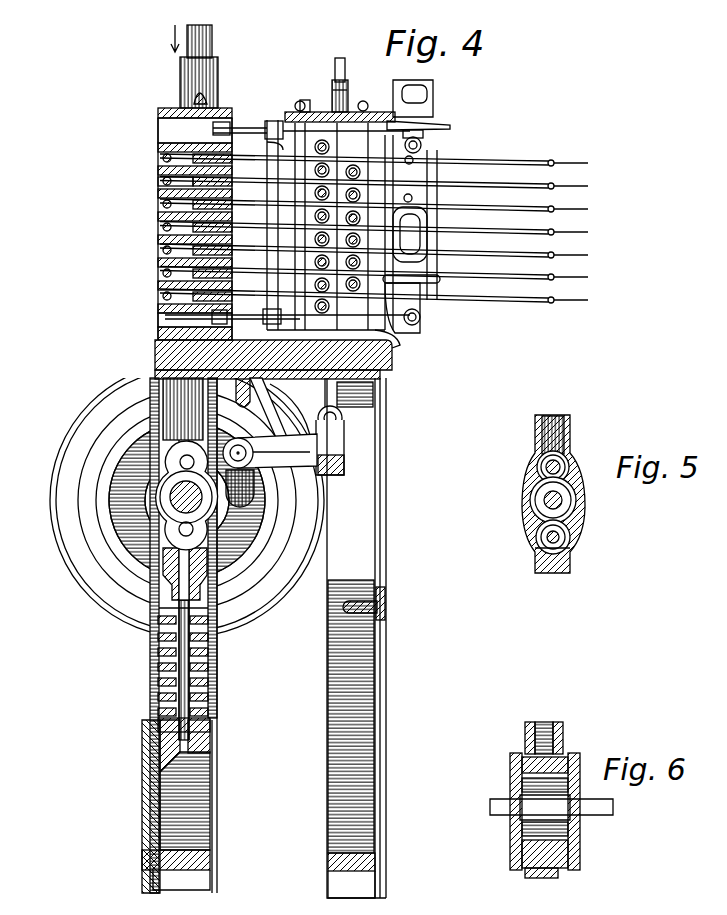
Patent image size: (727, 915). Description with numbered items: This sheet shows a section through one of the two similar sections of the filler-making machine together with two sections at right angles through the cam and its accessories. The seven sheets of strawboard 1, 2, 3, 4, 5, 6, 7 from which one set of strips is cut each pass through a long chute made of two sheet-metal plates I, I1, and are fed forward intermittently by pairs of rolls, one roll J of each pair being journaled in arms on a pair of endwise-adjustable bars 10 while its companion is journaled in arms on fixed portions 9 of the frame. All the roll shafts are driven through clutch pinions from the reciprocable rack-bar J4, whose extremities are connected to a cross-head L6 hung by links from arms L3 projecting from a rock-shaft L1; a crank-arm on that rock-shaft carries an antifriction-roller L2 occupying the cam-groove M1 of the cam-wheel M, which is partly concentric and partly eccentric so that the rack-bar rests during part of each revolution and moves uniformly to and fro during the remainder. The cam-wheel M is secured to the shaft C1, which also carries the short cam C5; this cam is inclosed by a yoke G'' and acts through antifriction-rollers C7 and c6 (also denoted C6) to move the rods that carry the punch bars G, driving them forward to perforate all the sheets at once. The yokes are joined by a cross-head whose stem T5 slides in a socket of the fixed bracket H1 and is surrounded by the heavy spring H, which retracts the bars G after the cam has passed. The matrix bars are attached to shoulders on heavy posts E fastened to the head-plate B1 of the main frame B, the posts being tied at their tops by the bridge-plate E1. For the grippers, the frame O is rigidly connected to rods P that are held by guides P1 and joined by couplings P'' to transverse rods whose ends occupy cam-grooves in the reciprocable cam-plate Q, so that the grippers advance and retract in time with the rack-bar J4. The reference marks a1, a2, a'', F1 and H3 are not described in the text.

In FIG. 4, the valve stem a1 is at (212, 42).
In FIG. 4, the bridge-plate E1 is at (160, 104).
In FIG. 4, the bar G is at (179, 229).
In FIG. 4, the valve partition F1 is at (158, 184).
In FIG. 4, the post E is at (158, 320).
In FIG. 4, the rod P is at (311, 209).
In FIG. 4, the frame O is at (272, 150).
In FIG. 4, the guide P1 is at (232, 321).
In FIG. 4, the head-plate B1 is at (158, 354).
In FIG. 4, the sheet of strawboard 1 is at (381, 162).
In FIG. 4, the sheet of strawboard 2 is at (381, 186).
In FIG. 4, the sheet of strawboard 3 is at (381, 208).
In FIG. 4, the sheet of strawboard 4 is at (381, 231).
In FIG. 4, the sheet of strawboard 5 is at (381, 253).
In FIG. 4, the sheet of strawboard 6 is at (381, 276).
In FIG. 4, the sheet of strawboard 7 is at (381, 298).
In FIG. 4, the plate I1 is at (500, 160).
In FIG. 4, the plate I is at (497, 167).
In FIG. 4, the fixed portion of the frame 9 is at (402, 195).
In FIG. 4, the bar 10 is at (349, 128).
In FIG. 4, the roll J is at (323, 140).
In FIG. 4, the coupling P'' is at (426, 213).
In FIG. 4, the cam-plate Q is at (421, 298).
In FIG. 4, the cam-wheel M is at (187, 500).
In FIG. 4, the cam-groove M1 is at (187, 500).
In FIG. 4, the spring H is at (212, 668).
In FIG. 4, the stem T5 is at (212, 642).
In FIG. 4, the nut H3 is at (175, 578).
In FIG. 4, the bracket H1 is at (212, 725).
In FIG. 4, the cam plate a2 is at (185, 460).
In FIG. 4, the shaft C1 is at (181, 527).
In FIG. 5, the shaft C1 is at (575, 503).
In FIG. 6, the shaft C1 is at (512, 825).
In FIG. 4, the yoke G'' is at (97, 526).
In FIG. 4, the rack-bar J4 is at (324, 390).
In FIG. 4, the arm L3 is at (282, 440).
In FIG. 4, the cross-head L6 is at (345, 460).
In FIG. 4, the rock-shaft L1 is at (237, 440).
In FIG. 4, the antifriction-roller L2 is at (256, 495).
In FIG. 4, the main frame B is at (380, 532).
In FIG. 5, the cam C5 is at (530, 506).
In FIG. 5, the antifriction-roller c6 is at (568, 468).
In FIG. 5, the antifriction-roller C7 is at (568, 538).
In FIG. 6, the antifriction-roller C7 is at (512, 853).
In FIG. 5, the bracket arm a'' is at (528, 547).
In FIG. 6, the bracket arm a'' is at (529, 796).
In FIG. 6, the antifriction-roller C6 is at (514, 788).